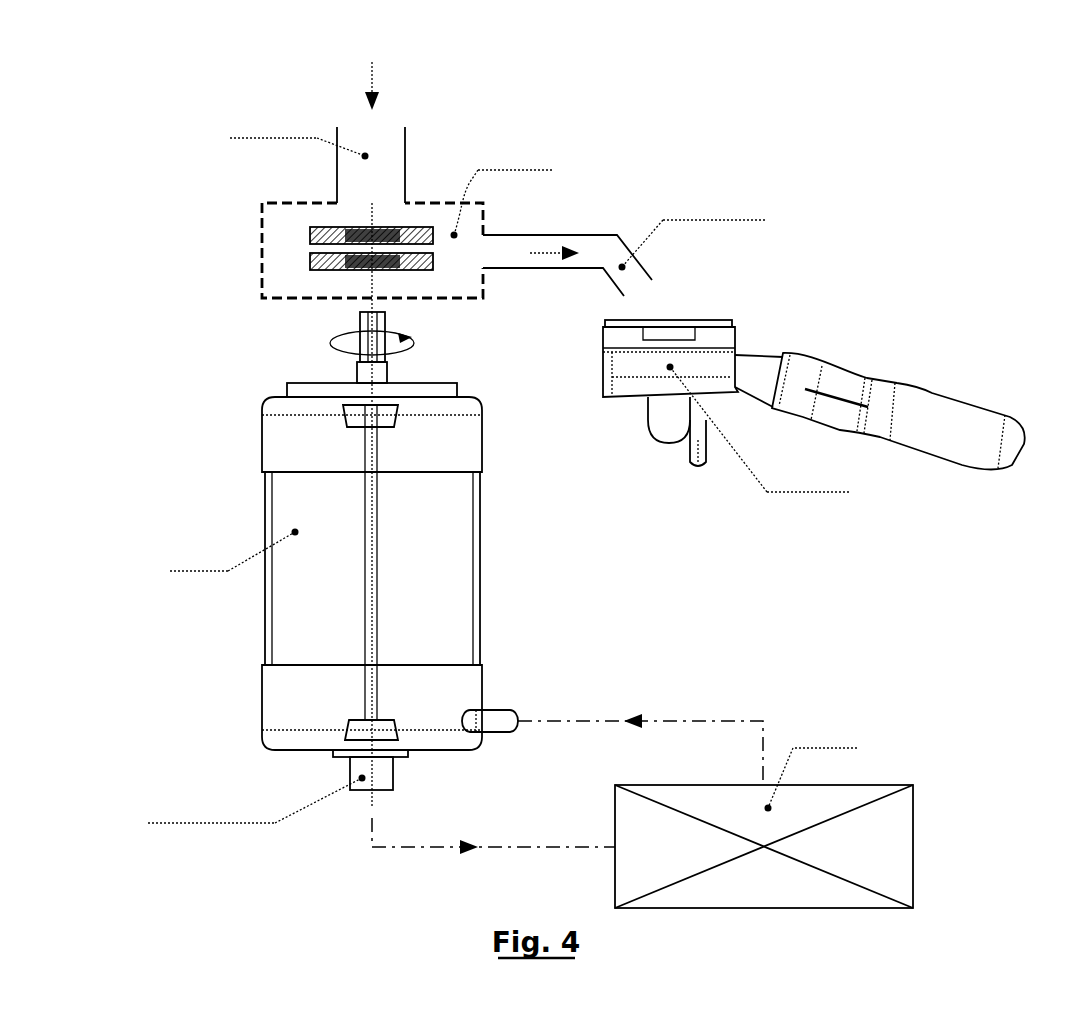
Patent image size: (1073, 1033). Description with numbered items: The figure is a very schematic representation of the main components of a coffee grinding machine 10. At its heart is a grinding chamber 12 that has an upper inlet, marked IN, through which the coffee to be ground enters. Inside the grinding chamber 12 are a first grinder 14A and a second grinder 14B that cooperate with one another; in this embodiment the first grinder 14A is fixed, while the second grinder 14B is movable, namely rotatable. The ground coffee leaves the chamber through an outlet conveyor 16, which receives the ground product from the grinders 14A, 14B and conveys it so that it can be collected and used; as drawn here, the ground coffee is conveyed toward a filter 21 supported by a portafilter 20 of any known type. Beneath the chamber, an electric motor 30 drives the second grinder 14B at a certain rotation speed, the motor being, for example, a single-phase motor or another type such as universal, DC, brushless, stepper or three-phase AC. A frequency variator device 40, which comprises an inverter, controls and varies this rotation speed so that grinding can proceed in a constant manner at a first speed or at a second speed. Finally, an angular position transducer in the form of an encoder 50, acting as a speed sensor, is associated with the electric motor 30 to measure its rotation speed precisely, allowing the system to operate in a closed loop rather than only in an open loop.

The coffee grinding machine 10 is at (798, 172).
The grinding chamber 12 is at (262, 231).
The first grinder 14A is at (312, 229).
The second grinder 14B is at (312, 269).
The outlet conveyor 16 is at (612, 235).
The portafilter 20 is at (921, 355).
The filter 21 is at (672, 320).
The electric motor 30 is at (265, 518).
The frequency variator device 40 is at (913, 837).
The encoder 50 is at (350, 775).